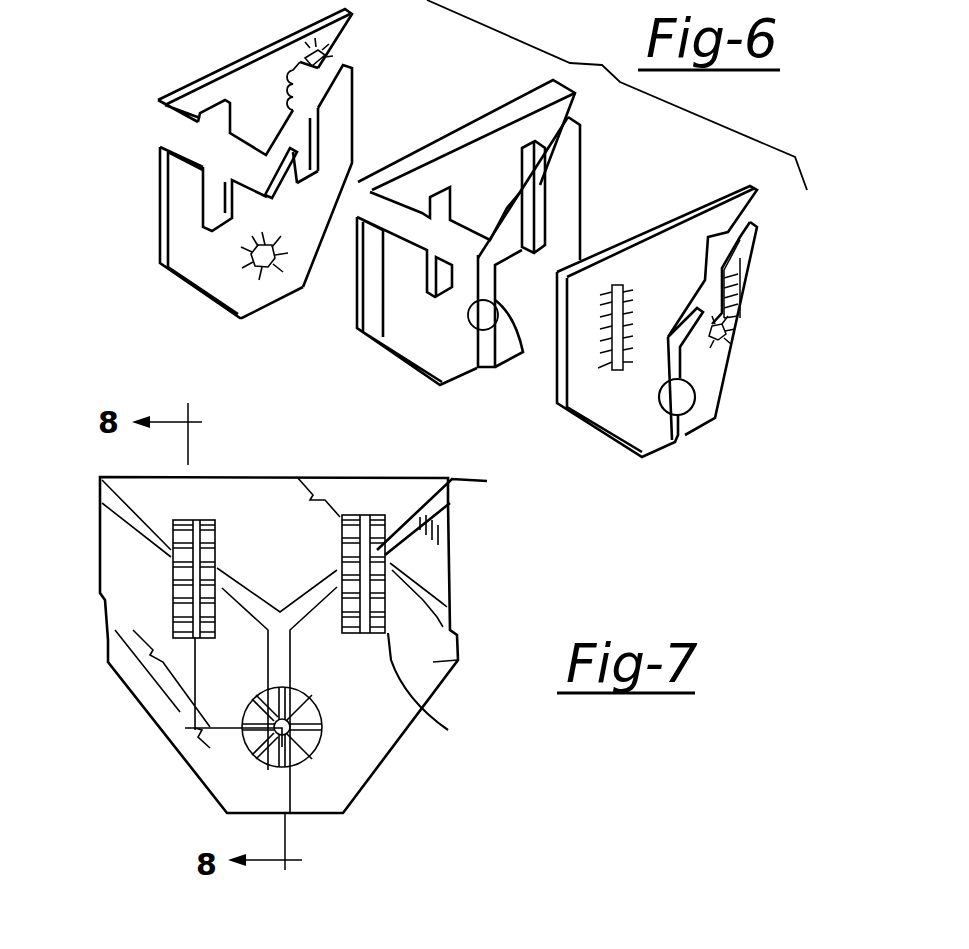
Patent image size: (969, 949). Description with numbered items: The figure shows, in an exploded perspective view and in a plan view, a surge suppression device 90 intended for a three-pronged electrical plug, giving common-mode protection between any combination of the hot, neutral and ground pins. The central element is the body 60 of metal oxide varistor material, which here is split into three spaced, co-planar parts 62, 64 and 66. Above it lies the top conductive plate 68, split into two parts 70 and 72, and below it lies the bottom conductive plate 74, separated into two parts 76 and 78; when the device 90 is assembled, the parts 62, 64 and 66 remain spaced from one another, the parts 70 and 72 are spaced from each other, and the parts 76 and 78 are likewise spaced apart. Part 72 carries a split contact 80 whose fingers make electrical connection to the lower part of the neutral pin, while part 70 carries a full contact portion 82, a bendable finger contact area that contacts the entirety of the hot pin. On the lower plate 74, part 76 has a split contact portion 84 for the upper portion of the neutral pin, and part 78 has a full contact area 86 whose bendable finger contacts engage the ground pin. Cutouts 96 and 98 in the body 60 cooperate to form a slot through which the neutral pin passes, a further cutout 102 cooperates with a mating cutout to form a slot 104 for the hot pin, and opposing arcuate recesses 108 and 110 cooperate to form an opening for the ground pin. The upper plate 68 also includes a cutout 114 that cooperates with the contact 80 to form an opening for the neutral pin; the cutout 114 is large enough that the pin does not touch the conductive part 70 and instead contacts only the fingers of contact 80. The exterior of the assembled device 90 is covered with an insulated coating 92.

In FIG. 6, the body of metal oxide varistor material 60 is at (636, 185).
In FIG. 6, the part of MOV body 62 is at (506, 200).
In FIG. 7, the part of MOV body 62 is at (387, 497).
In FIG. 6, the part of MOV body 64 is at (549, 298).
In FIG. 7, the part of MOV body 64 is at (437, 593).
In FIG. 6, the part of MOV body 66 is at (446, 338).
In FIG. 7, the part of MOV body 66 is at (157, 702).
In FIG. 6, the top conductive plate 68 is at (751, 388).
In FIG. 6, the part of top conductive plate 70 is at (644, 420).
In FIG. 7, the part of top conductive plate 70 is at (340, 515).
In FIG. 6, the part of top conductive plate 72 is at (736, 380).
In FIG. 7, the part of top conductive plate 72 is at (445, 617).
In FIG. 6, the bottom conductive plate 74 is at (391, 106).
In FIG. 6, the part of bottom conductive plate 76 is at (274, 109).
In FIG. 7, the part of bottom conductive plate 76 is at (392, 500).
In FIG. 6, the part of bottom conductive plate 78 is at (229, 271).
In FIG. 7, the part of bottom conductive plate 78 is at (437, 550).
In FIG. 6, the split contact 80 is at (732, 296).
In FIG. 7, the split contact 80 is at (436, 690).
In FIG. 6, the full contact portion 82 is at (593, 360).
In FIG. 7, the full contact portion 82 is at (173, 560).
In FIG. 6, the split contact portion 84 is at (318, 46).
In FIG. 7, the split contact portion 84 is at (451, 510).
In FIG. 6, the full contact area 86 is at (247, 273).
In FIG. 7, the full contact area 86 is at (247, 752).
In FIG. 7, the device 90 is at (253, 452).
In FIG. 7, the insulated coating 92 is at (458, 660).
In FIG. 6, the cutout 96 is at (538, 142).
In FIG. 6, the cutout 98 is at (546, 226).
In FIG. 6, the cutout 102 is at (442, 198).
In FIG. 6, the slot 104 is at (433, 287).
In FIG. 6, the arcuate recess 108 is at (440, 385).
In FIG. 7, the arcuate recess 108 is at (395, 478).
In FIG. 6, the arcuate recess 110 is at (522, 353).
In FIG. 6, the cutout 114 is at (727, 235).